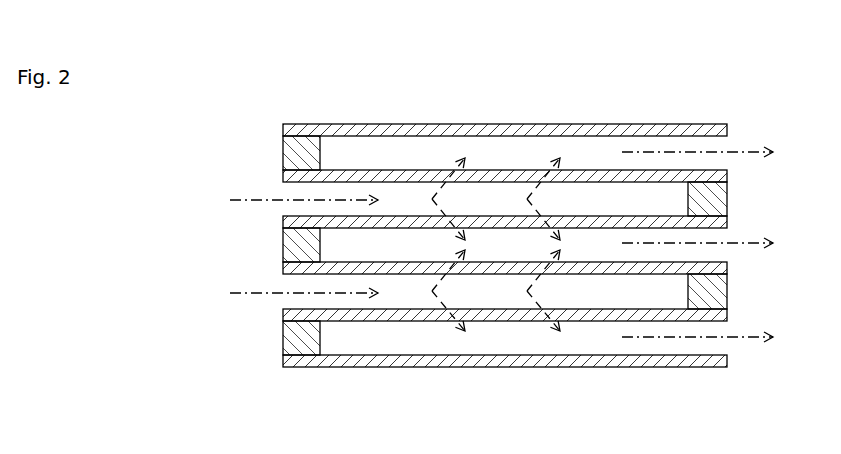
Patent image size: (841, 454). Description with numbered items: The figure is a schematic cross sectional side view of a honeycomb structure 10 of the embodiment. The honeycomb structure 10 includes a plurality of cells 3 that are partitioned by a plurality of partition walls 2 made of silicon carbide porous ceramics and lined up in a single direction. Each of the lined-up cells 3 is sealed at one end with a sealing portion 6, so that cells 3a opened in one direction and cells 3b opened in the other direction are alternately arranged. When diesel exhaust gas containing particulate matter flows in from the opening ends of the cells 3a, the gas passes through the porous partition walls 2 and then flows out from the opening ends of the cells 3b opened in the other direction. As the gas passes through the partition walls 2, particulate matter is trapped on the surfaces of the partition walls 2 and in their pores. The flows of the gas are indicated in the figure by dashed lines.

The partition wall 2 is at (374, 124).
The cell 3 is at (560, 249).
The cell opened in one direction 3a is at (488, 196).
The cell opened in the other direction 3b is at (588, 152).
The sealing portion 6 is at (300, 155).
The honeycomb structure 10 is at (503, 235).